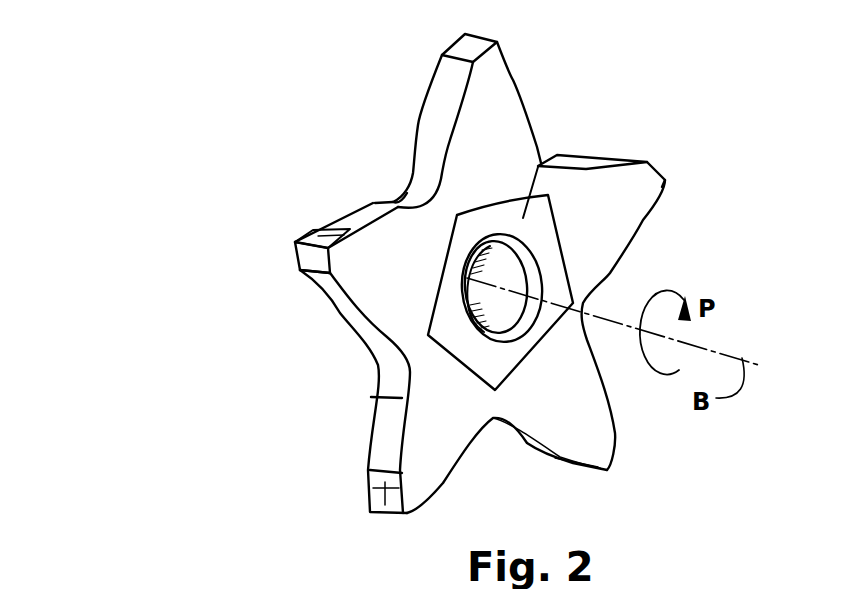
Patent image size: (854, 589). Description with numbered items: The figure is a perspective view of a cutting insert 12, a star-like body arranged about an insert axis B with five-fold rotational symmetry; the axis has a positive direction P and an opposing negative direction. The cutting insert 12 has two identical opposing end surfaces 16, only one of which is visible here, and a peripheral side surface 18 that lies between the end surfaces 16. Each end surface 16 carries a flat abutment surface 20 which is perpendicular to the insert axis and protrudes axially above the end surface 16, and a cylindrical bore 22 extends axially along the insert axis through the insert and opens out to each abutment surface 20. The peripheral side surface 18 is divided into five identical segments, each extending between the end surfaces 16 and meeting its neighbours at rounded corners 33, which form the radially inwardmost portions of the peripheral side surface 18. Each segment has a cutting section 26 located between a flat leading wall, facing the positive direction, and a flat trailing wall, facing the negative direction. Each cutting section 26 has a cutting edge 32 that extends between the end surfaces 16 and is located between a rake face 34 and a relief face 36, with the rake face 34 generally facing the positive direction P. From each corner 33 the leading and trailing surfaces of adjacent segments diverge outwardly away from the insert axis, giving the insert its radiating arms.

The cutting insert 12 is at (168, 88).
The end surface 16 is at (508, 110).
The peripheral side surface 18 is at (431, 108).
The abutment surface 20 is at (543, 163).
The cylindrical bore 22 is at (535, 247).
The cutting section 26 is at (279, 222).
The cutting edge 32 is at (297, 246).
The rounded corner 33 is at (417, 195).
The rake face 34 is at (318, 231).
The relief face 36 is at (312, 262).